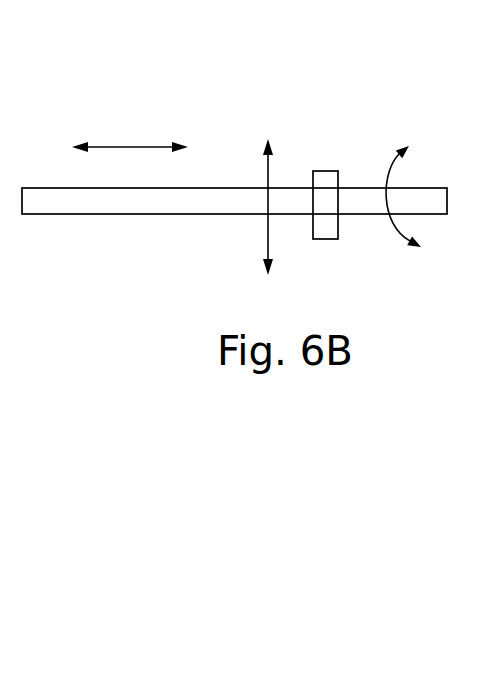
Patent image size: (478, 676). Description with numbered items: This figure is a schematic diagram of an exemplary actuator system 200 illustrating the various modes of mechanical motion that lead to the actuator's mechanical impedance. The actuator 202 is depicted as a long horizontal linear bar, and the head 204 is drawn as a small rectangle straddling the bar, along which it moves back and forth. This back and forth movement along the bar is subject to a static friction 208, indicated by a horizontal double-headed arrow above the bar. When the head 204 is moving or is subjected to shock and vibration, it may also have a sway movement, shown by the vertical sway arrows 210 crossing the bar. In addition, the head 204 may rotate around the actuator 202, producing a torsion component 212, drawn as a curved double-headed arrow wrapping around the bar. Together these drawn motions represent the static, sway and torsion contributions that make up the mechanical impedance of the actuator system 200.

The actuator system 200 is at (29, 437).
The actuator 202 is at (155, 214).
The head 204 is at (322, 171).
The static friction 208 is at (130, 110).
The sway arrows 210 is at (256, 183).
The torsion component 212 is at (404, 235).